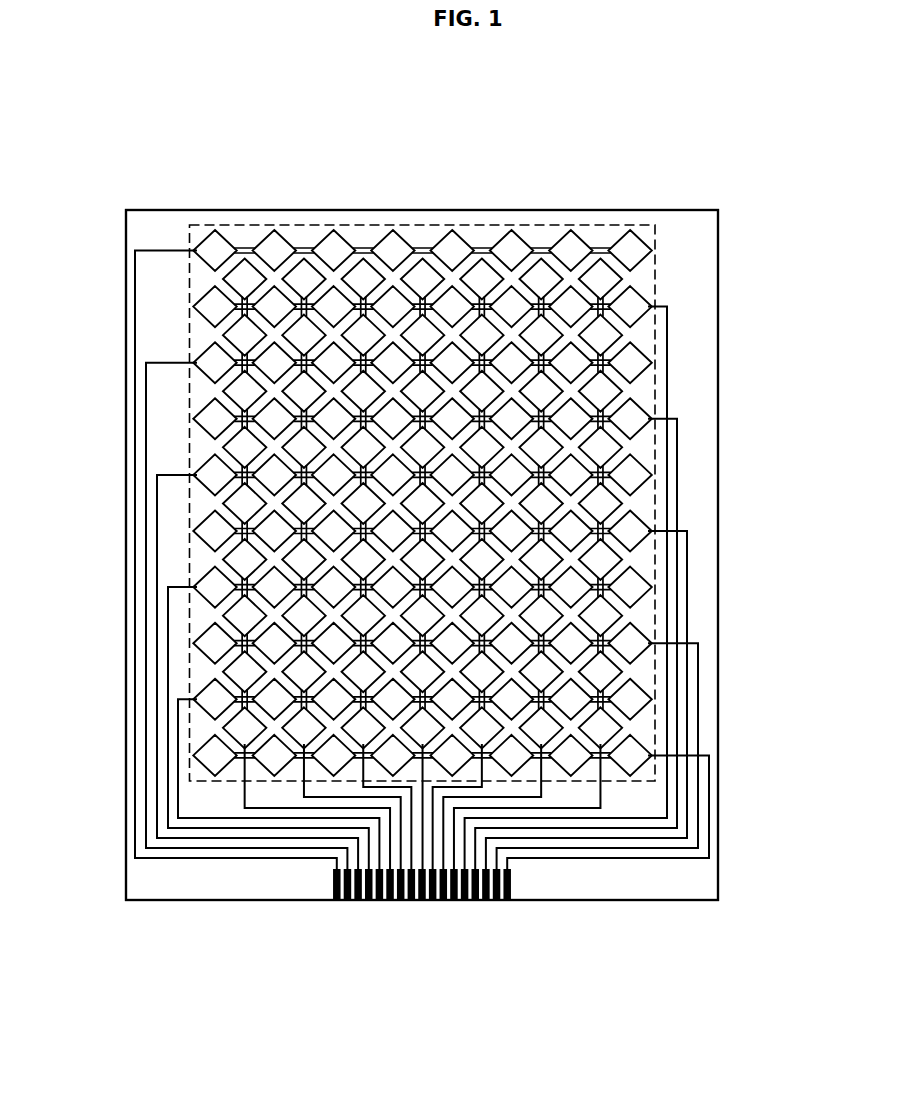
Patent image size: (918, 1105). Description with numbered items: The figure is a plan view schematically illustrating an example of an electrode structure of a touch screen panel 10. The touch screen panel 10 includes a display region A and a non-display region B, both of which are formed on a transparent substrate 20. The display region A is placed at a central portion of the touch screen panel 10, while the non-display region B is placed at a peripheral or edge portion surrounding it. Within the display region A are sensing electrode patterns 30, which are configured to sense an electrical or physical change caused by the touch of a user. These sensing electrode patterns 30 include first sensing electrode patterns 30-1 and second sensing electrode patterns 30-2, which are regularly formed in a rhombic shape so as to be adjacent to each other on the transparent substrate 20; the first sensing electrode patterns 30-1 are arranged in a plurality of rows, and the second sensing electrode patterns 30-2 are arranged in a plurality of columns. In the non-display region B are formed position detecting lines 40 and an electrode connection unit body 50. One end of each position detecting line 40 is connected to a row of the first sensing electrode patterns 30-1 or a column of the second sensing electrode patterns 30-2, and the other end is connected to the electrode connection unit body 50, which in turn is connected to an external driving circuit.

The touch screen panel 10 is at (92, 82).
The transparent substrate 20 is at (213, 210).
The display region A is at (285, 223).
The non-display region B is at (685, 225).
The sensing electrode patterns 30 is at (508, 138).
The first sensing electrode patterns 30-1 is at (397, 232).
The second sensing electrode patterns 30-2 is at (487, 240).
The position detecting lines 40 is at (127, 630).
The electrode connection unit body 50 is at (512, 875).